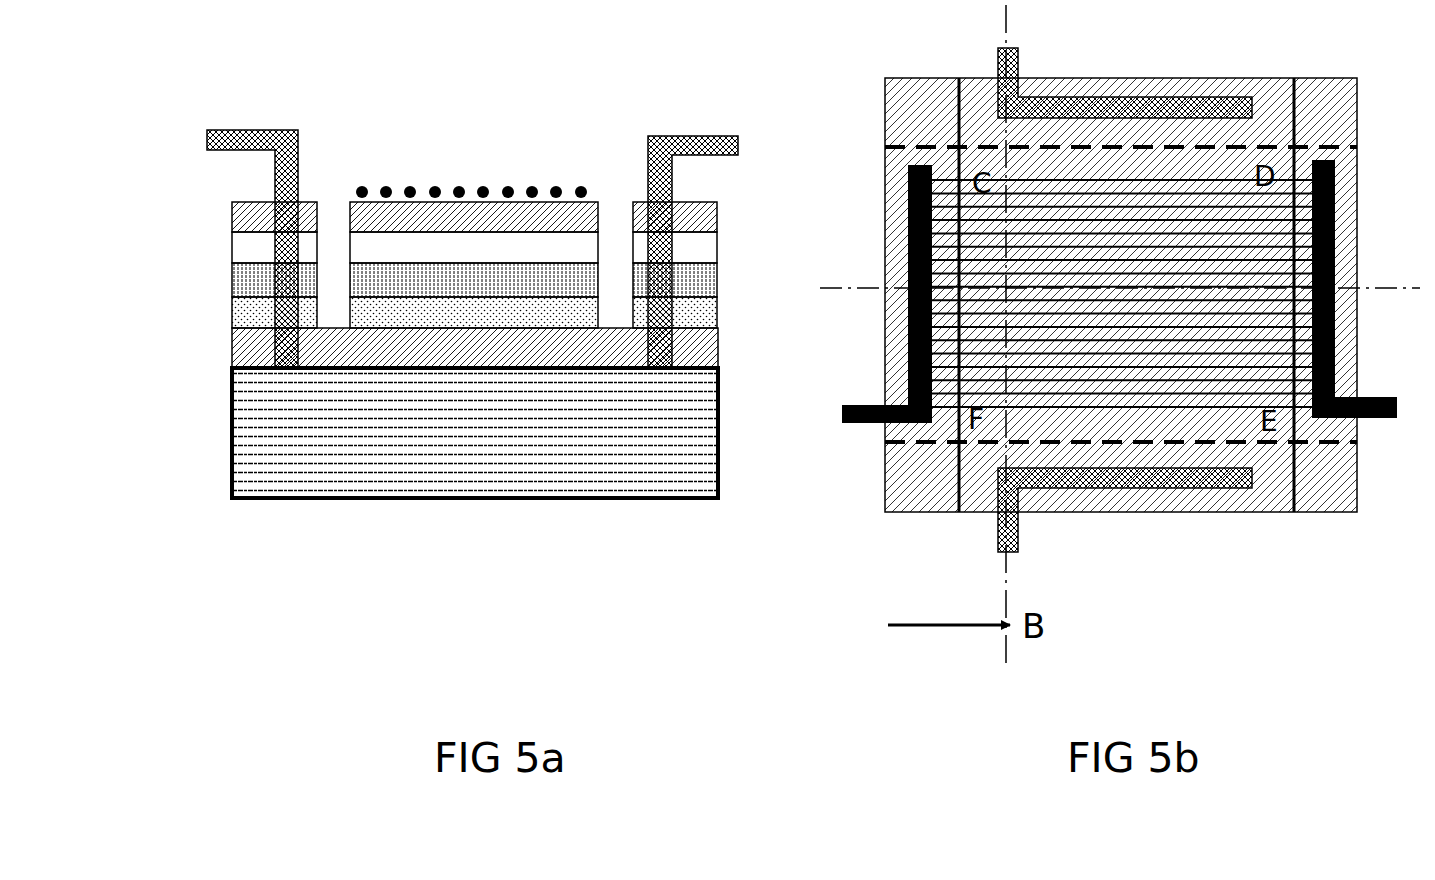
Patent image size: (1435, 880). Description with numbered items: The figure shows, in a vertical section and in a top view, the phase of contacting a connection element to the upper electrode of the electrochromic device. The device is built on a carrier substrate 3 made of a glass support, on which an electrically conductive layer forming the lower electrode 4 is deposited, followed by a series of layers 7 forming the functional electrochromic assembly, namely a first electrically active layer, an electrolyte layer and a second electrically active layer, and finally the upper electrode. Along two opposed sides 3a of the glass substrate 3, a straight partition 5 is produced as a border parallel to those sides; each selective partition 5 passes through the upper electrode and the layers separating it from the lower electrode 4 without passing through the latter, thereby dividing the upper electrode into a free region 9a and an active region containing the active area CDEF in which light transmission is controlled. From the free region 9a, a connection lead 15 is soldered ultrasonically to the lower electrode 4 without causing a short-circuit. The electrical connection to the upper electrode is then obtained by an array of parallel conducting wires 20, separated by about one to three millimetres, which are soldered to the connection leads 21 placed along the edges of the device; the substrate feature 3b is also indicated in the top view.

In FIG. 5A, the carrier substrate 3 is at (540, 467).
In FIG. 5B, the opposed sides of the glass substrate 3a is at (883, 97).
In FIG. 5B, the substrate boundary 3b is at (960, 77).
In FIG. 5A, the lower electrode 4 is at (236, 347).
In FIG. 5A, the straight partition 5 is at (335, 233).
In FIG. 5A, the series of layers 7 is at (727, 233).
In FIG. 5A, the connection lead 15 is at (213, 149).
In FIG. 5B, the connection lead 15 is at (1178, 98).
In FIG. 5A, the array of conducting wires 20 is at (580, 184).
In FIG. 5B, the array of conducting wires 20 is at (1227, 207).
In FIG. 5B, the connection leads 21 is at (880, 427).
In FIG. 5B, the free region 9a is at (1108, 269).